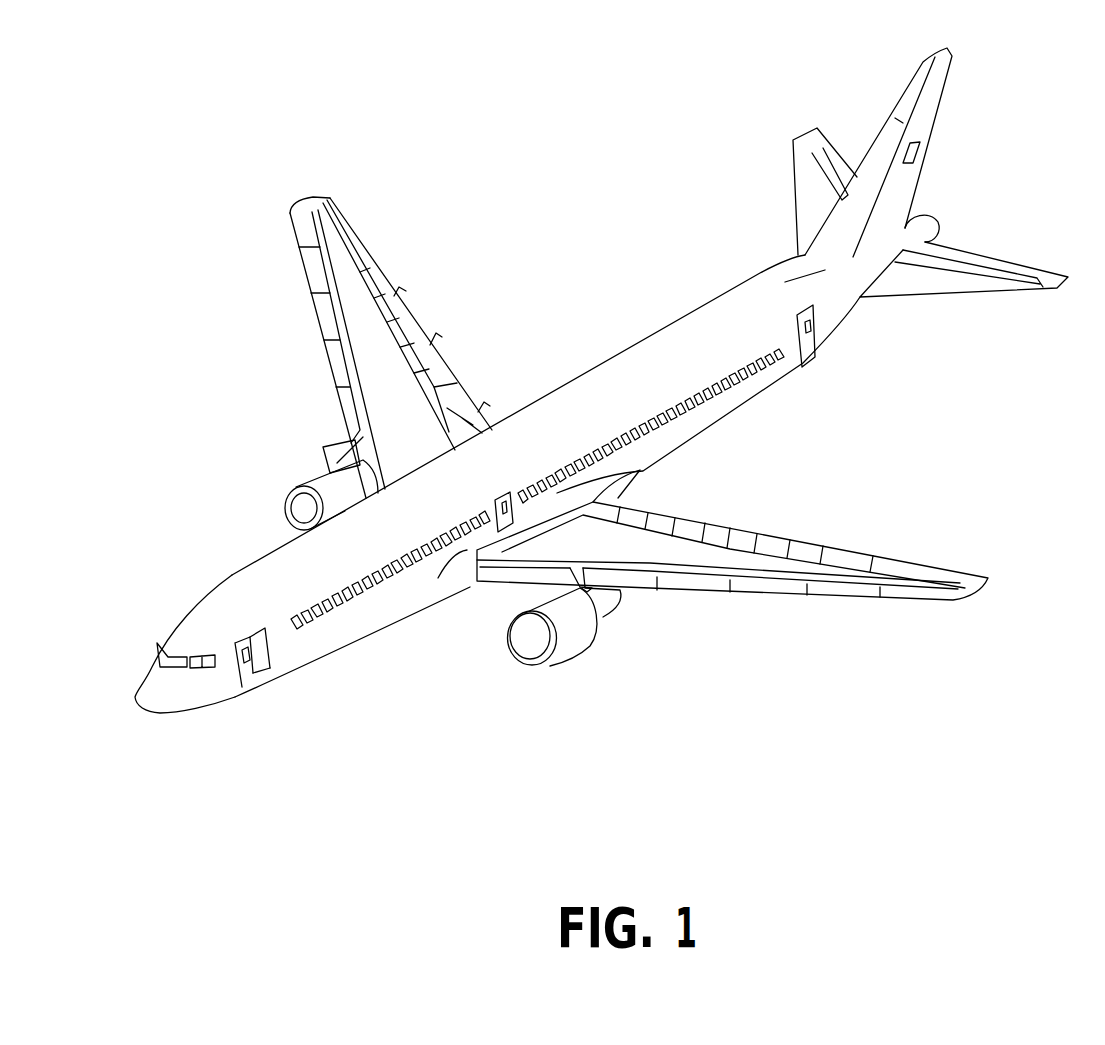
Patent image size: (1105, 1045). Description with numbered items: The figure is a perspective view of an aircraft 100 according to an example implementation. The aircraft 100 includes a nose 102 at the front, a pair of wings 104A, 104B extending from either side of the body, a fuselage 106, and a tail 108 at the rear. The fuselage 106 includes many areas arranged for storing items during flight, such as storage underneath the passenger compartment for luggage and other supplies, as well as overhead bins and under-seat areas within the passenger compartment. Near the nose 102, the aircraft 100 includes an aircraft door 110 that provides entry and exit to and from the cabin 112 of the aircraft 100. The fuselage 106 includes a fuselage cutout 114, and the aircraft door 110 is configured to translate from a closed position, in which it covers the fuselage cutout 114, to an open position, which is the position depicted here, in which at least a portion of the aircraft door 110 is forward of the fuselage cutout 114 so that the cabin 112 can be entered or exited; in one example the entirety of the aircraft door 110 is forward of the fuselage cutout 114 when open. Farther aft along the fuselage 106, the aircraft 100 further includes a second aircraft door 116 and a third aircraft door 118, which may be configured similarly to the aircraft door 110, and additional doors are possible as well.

The aircraft 100 is at (530, 316).
The nose 102 is at (158, 716).
The wing 104A is at (328, 197).
The wing 104B is at (990, 579).
The fuselage 106 is at (693, 425).
The tail 108 is at (951, 58).
The aircraft door 110 is at (243, 695).
The cabin 112 is at (266, 650).
The fuselage cutout 114 is at (262, 675).
The second aircraft door 116 is at (510, 494).
The third aircraft door 118 is at (815, 360).